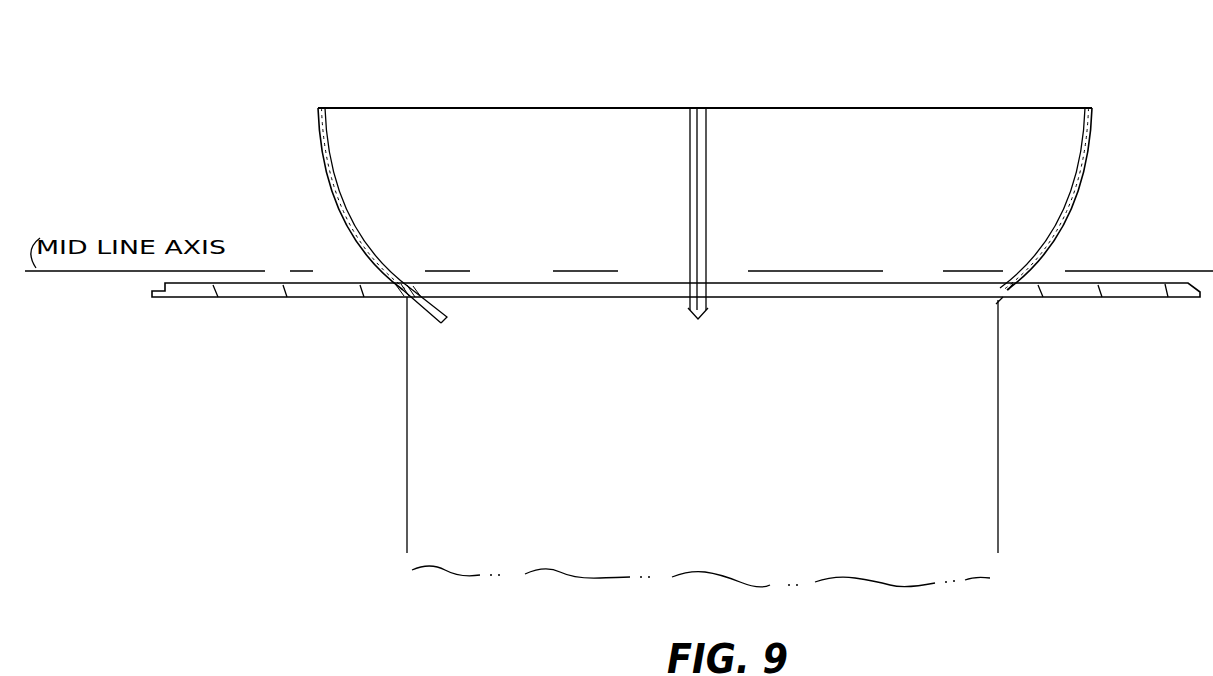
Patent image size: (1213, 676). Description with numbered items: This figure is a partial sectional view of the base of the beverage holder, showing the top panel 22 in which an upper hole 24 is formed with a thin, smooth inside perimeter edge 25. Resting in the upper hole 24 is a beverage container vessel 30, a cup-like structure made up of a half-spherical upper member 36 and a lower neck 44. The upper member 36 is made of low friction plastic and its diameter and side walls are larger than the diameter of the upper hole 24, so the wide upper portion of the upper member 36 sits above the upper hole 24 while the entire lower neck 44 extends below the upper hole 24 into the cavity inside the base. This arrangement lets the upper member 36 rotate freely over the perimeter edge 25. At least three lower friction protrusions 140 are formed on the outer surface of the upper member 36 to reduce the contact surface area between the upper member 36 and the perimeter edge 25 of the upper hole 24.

The top panel 22 is at (1110, 283).
The upper hole 24 is at (875, 328).
The perimeter edge 25 is at (393, 290).
The beverage container vessel 30 is at (1031, 96).
The upper member 36 is at (372, 143).
The lower neck 44 is at (423, 402).
The lower friction protrusions 140 is at (345, 212).